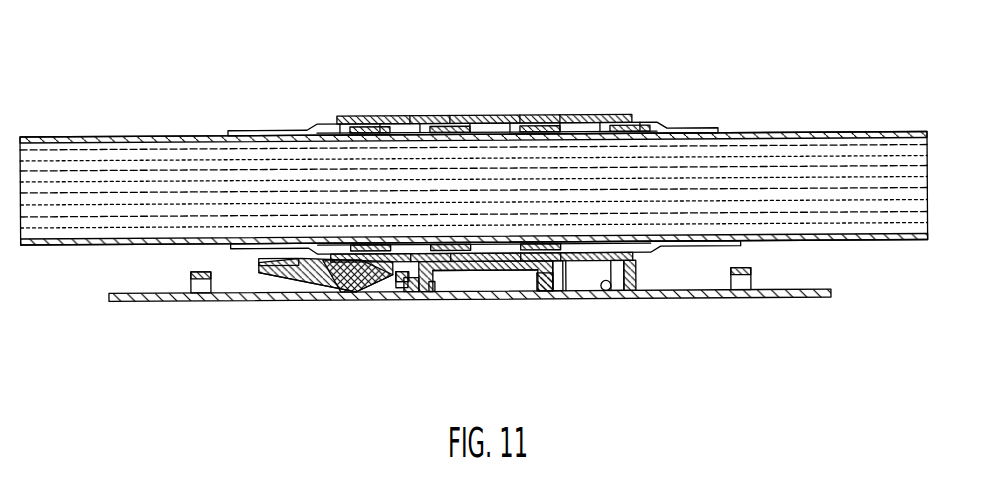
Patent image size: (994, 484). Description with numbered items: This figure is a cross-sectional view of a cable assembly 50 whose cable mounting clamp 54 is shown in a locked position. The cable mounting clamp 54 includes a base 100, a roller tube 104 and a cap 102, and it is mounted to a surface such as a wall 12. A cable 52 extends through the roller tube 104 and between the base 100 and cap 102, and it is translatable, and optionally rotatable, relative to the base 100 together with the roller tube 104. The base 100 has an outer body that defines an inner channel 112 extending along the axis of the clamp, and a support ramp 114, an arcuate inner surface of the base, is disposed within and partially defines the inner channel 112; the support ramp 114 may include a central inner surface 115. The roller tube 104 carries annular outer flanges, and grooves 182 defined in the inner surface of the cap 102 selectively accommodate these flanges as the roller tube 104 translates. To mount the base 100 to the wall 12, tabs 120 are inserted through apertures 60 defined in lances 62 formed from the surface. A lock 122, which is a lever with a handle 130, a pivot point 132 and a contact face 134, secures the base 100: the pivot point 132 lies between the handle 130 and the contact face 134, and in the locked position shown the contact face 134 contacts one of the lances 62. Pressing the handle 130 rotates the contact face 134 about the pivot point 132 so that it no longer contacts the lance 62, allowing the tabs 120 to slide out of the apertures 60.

The wall 12 is at (722, 293).
The cable assembly 50 is at (814, 102).
The cable 52 is at (99, 100).
The cable mounting clamp 54 is at (650, 288).
The aperture 60 is at (392, 294).
The lance 62 is at (407, 284).
The base 100 is at (642, 267).
The cap 102 is at (610, 116).
The roller tube 104 is at (525, 118).
The inner channel 112 is at (447, 270).
The support ramp 114 is at (473, 282).
The central inner surface 115 is at (505, 263).
The tab 120 is at (428, 290).
The lock 122 is at (265, 283).
The handle 130 is at (240, 280).
The pivot point 132 is at (322, 288).
The contact face 134 is at (339, 279).
The groove 182 is at (407, 98).